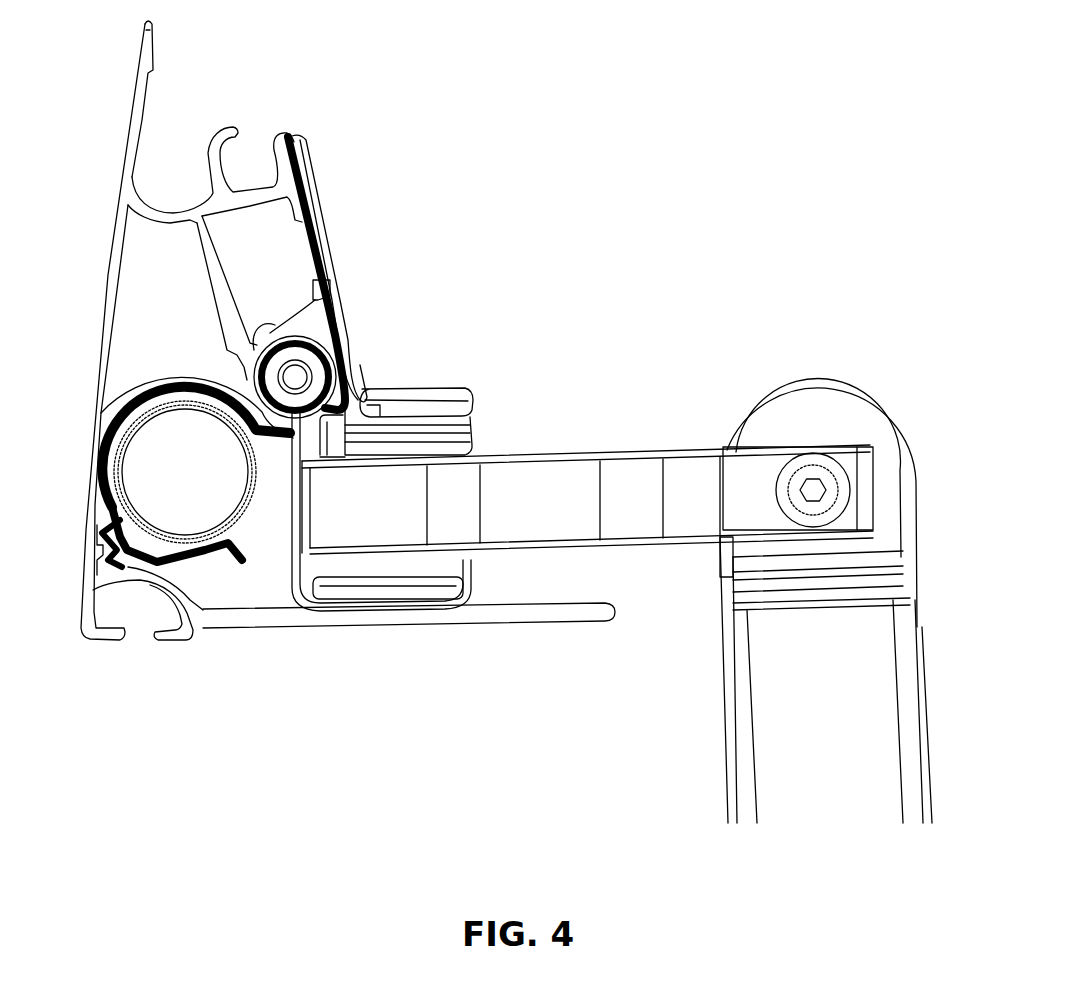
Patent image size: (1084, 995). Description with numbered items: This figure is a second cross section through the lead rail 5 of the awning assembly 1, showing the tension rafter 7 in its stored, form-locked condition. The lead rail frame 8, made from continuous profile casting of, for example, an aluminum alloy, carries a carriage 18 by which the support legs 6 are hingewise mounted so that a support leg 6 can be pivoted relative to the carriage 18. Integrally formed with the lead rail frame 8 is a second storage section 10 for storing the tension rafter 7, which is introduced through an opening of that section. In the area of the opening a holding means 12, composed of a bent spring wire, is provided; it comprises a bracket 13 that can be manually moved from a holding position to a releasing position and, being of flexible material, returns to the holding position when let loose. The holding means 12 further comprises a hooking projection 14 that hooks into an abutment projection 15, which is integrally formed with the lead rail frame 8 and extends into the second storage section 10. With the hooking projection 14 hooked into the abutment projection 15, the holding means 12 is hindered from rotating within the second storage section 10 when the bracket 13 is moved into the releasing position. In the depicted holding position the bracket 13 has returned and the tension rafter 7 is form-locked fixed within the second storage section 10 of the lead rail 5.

The awning assembly 1 is at (665, 185).
The lead rail 5 is at (420, 117).
The support leg 6 is at (777, 747).
The tension rafter 7 is at (247, 518).
The lead rail frame 8 is at (140, 120).
The second storage section 10 is at (266, 498).
The holding means 12 is at (203, 558).
The bracket 13 is at (228, 562).
The hooking projection 14 is at (120, 558).
The abutment projection 15 is at (127, 567).
The carriage 18 is at (405, 382).